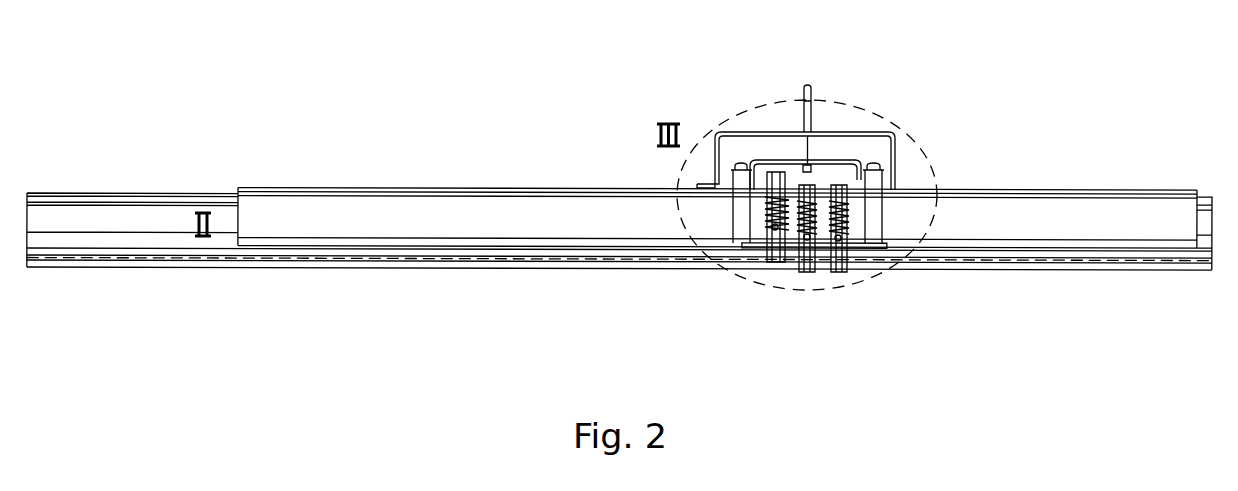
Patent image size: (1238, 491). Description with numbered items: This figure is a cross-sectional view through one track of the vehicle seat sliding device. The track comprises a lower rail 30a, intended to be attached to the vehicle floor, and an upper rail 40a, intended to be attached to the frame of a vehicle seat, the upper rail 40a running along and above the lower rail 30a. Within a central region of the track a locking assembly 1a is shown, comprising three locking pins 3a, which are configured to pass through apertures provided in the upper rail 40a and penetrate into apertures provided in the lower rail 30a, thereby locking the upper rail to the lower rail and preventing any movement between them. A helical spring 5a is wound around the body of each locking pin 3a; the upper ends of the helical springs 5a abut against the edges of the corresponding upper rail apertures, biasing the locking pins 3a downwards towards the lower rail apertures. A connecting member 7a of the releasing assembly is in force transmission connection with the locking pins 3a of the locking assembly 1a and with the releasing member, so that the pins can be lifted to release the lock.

The lower rail 30a is at (152, 194).
The upper rail 40a is at (347, 187).
The locking pin 3a is at (838, 185).
The connecting member 7a is at (946, 159).
The helical spring 5a is at (823, 234).
The locking assembly 1a is at (830, 281).